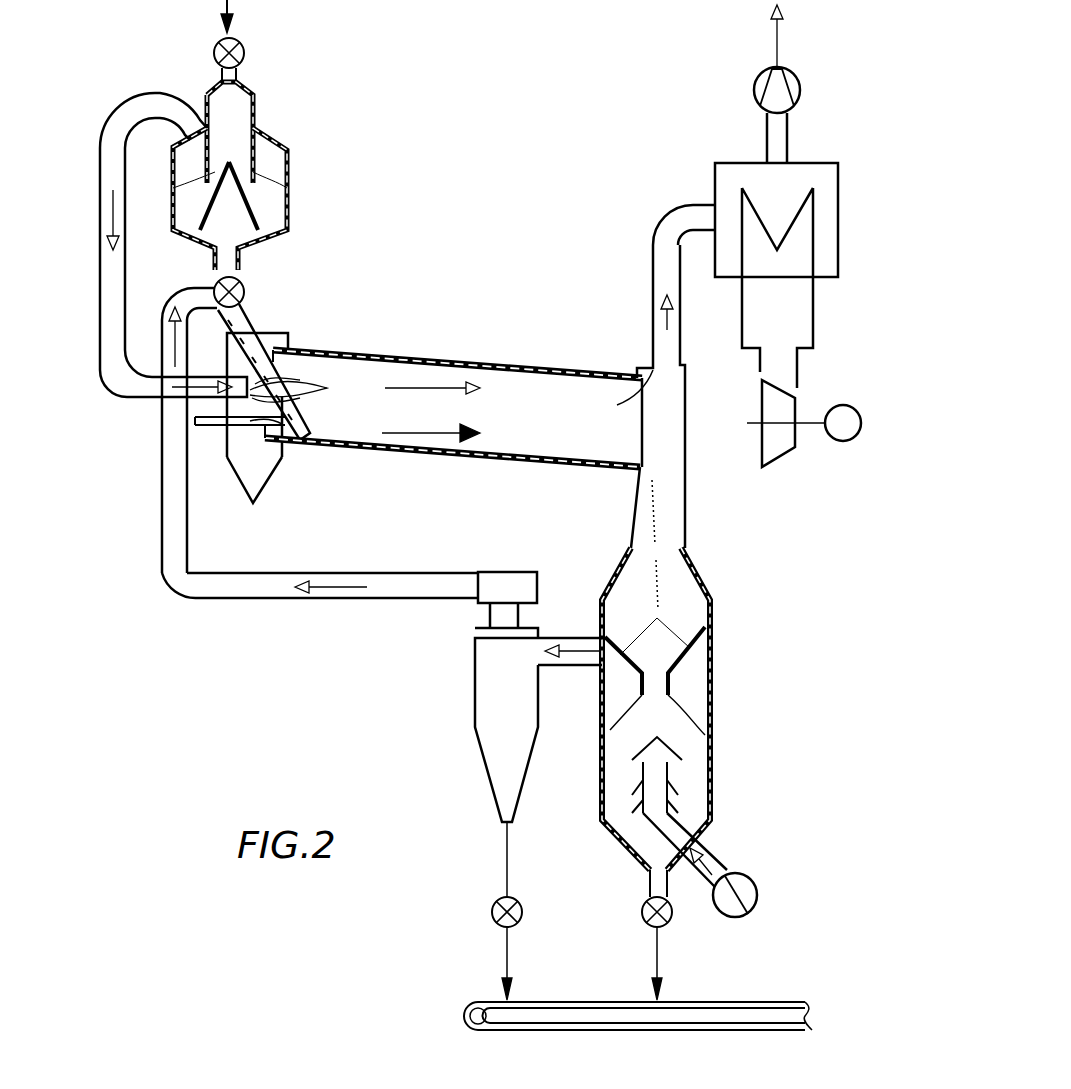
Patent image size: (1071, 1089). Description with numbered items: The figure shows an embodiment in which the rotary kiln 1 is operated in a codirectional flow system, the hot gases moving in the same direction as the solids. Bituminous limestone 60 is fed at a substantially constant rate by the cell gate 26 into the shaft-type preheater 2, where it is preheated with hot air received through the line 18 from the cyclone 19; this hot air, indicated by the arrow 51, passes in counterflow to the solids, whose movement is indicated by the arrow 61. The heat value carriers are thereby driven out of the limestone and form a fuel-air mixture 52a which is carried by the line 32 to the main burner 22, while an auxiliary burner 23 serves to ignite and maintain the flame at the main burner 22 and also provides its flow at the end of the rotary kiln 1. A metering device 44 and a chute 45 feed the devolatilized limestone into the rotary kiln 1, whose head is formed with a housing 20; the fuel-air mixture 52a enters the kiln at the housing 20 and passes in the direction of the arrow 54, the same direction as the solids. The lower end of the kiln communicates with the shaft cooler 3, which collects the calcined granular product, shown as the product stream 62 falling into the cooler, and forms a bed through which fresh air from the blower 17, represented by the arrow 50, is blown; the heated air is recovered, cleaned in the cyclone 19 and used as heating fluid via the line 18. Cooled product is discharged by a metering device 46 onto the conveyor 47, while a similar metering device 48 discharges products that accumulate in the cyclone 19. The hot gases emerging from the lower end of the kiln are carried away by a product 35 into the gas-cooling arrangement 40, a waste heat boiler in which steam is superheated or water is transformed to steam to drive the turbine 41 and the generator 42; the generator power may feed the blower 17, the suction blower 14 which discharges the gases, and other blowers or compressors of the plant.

The rotary kiln 1 is at (350, 350).
The shaft-type preheater 2 is at (265, 130).
The shaft cooler 3 is at (713, 707).
The suction blower 14 is at (752, 80).
The blower 17 is at (758, 895).
The line 18 is at (420, 600).
The cyclone 19 is at (485, 768).
The housing 20 is at (270, 485).
The main burner 22 is at (227, 348).
The auxiliary burner 23 is at (207, 428).
The cell gate 26 is at (245, 45).
The line 32 is at (137, 400).
The product 35 is at (670, 208).
The gas-cooling arrangement 40 is at (740, 162).
The turbine 41 is at (775, 470).
The generator 42 is at (835, 445).
The metering device 44 is at (243, 285).
The chute 45 is at (258, 330).
The metering device 46 is at (672, 920).
The conveyor 47 is at (478, 998).
The metering device 48 is at (490, 905).
The arrow 50 is at (712, 862).
The arrow 51 is at (338, 599).
The fuel-air mixture 52a is at (128, 210).
The arrow 54 is at (428, 388).
The bituminous limestone 60 is at (235, 108).
The arrow 61 is at (312, 452).
The material stream 62 is at (655, 592).